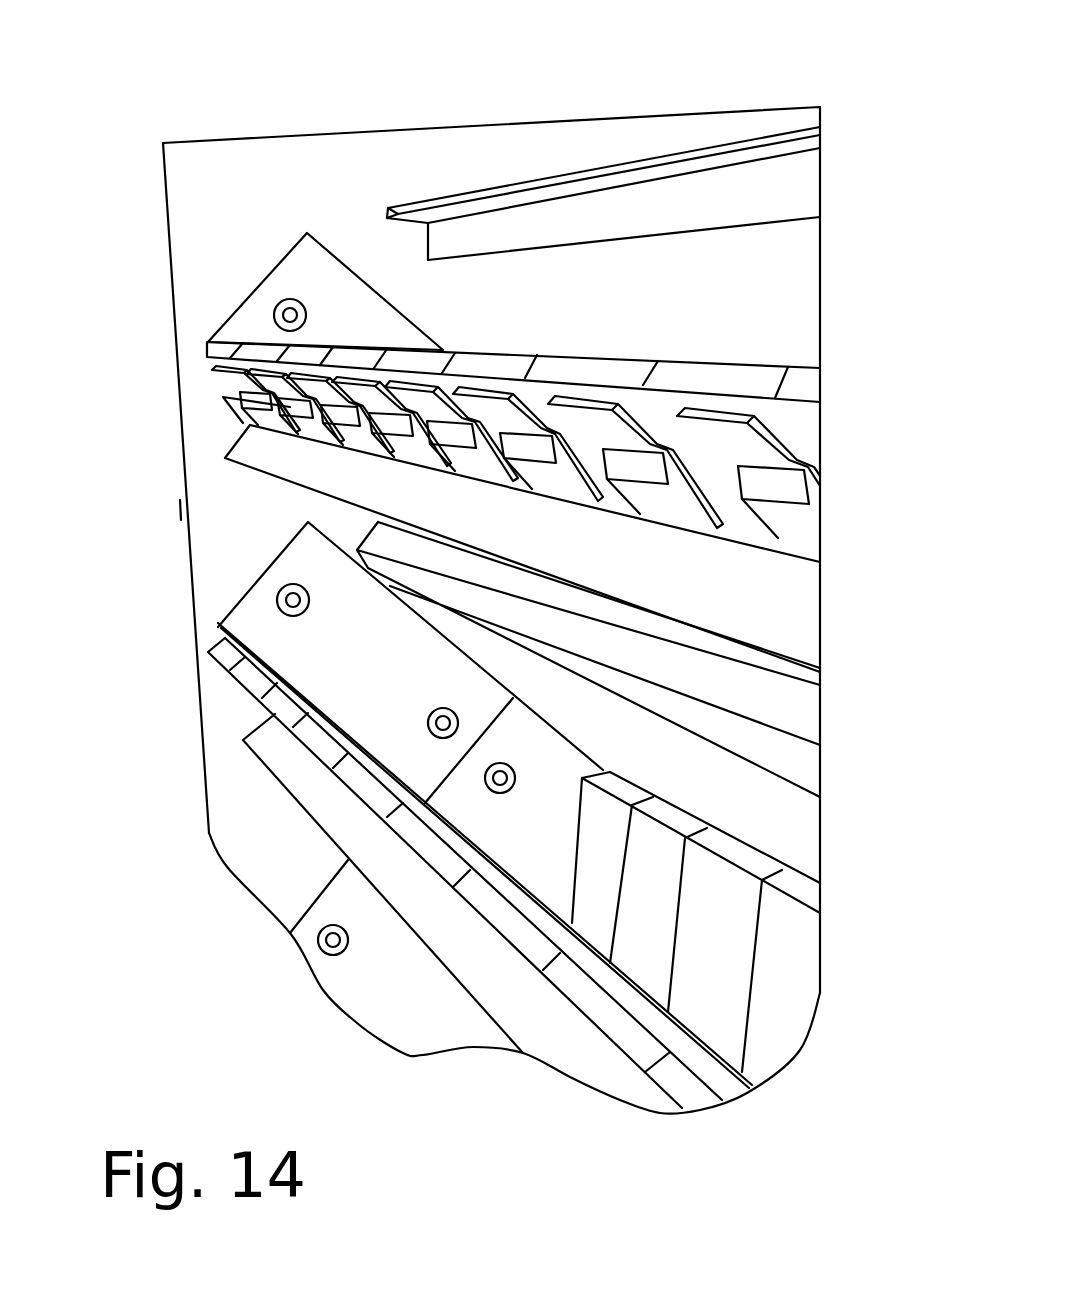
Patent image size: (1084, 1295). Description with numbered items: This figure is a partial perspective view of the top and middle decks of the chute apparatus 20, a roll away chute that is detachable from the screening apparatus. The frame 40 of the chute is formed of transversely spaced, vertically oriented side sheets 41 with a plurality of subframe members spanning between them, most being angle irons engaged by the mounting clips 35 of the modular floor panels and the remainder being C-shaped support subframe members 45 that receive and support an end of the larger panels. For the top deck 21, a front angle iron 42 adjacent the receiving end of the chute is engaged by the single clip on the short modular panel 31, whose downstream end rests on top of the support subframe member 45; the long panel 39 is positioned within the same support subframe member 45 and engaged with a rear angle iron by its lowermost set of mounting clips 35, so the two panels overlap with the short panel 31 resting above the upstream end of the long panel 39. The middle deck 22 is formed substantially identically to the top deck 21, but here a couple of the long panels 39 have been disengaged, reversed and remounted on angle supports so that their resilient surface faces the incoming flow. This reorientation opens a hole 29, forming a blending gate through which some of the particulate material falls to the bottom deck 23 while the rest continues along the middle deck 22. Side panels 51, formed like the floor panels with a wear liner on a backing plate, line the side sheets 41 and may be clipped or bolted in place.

The chute apparatus 20 is at (455, 105).
The top deck 21 is at (401, 278).
The middle deck 22 is at (353, 605).
The bottom deck 23 is at (410, 1022).
The hole 29 is at (597, 918).
The short modular panel 31 is at (698, 380).
The mounting clips 35 is at (770, 458).
The long panel 39 is at (620, 785).
The frame 40 is at (667, 103).
The side sheets 41 is at (215, 548).
The front angle iron 42 is at (742, 532).
The support subframe member 45 is at (790, 703).
The side panel 51 is at (250, 325).